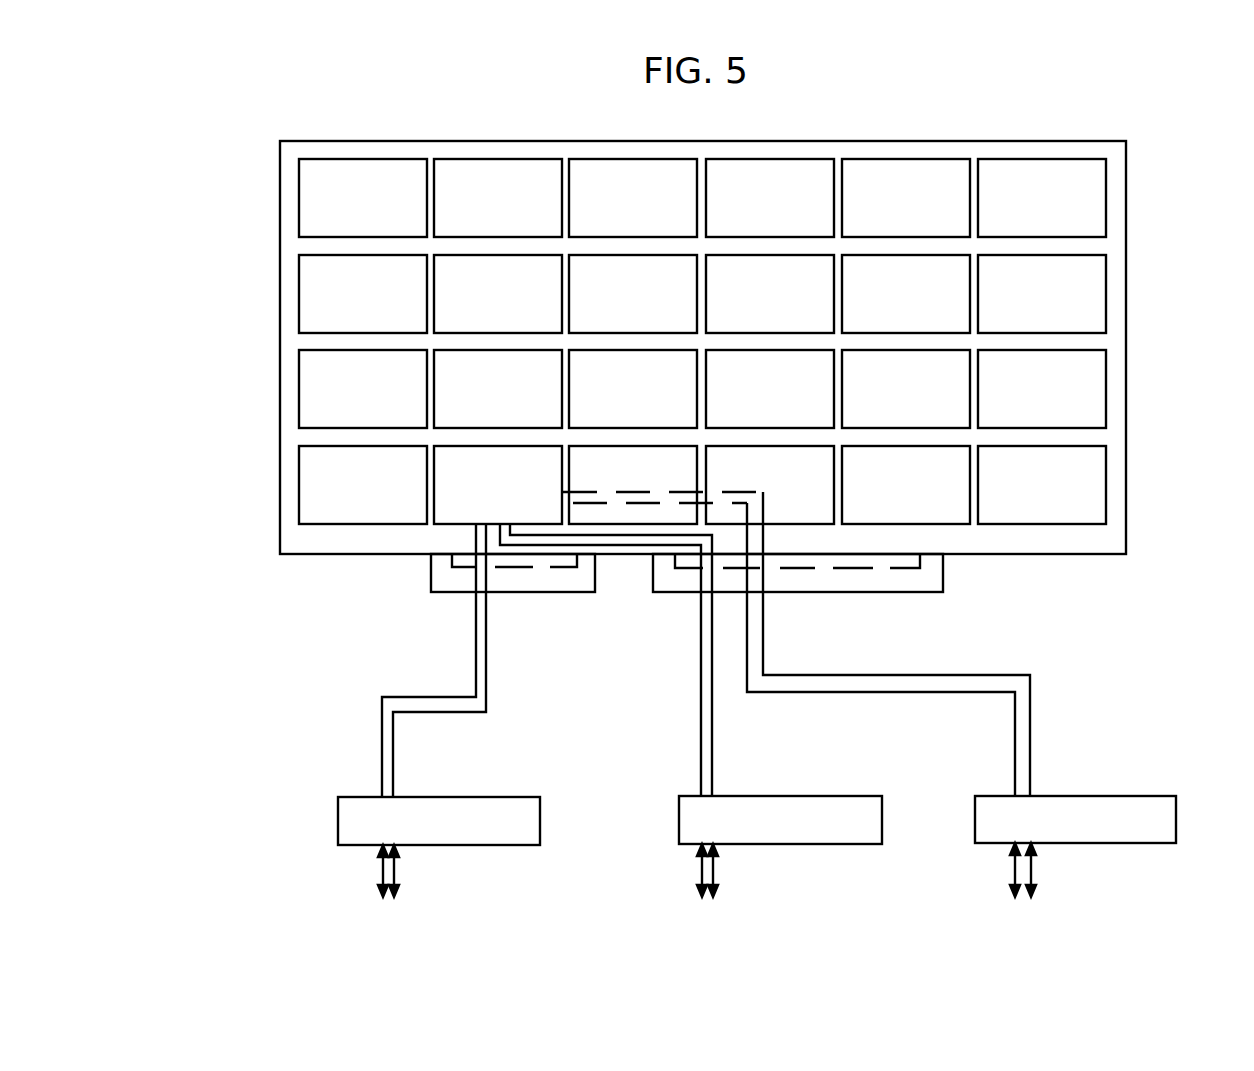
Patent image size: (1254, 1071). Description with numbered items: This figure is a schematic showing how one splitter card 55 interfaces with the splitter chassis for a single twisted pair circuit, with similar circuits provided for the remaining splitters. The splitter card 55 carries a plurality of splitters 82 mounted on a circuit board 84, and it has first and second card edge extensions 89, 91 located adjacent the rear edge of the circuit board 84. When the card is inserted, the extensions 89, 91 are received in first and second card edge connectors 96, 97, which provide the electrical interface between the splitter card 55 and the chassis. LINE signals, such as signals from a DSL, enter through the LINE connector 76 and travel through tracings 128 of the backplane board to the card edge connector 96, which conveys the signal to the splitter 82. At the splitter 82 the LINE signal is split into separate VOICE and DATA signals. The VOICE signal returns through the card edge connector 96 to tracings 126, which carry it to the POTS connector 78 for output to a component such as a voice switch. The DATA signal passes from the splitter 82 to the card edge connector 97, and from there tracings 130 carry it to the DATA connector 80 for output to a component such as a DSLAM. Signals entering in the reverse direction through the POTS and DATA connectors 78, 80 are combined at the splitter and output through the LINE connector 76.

The splitter card 55 is at (707, 369).
The circuit board 84 is at (278, 285).
The splitter 82 is at (437, 524).
The second card edge connector 97 is at (464, 605).
The second card edge extension 91 is at (533, 567).
The first card edge connector 96 is at (828, 599).
The first card edge extension 89 is at (860, 568).
The tracings 130 is at (380, 753).
The tracings 128 is at (702, 700).
The tracings 126 is at (1030, 705).
The DATA connector 80 is at (338, 820).
The LINE connector 76 is at (842, 844).
The POTS connector 78 is at (1176, 823).